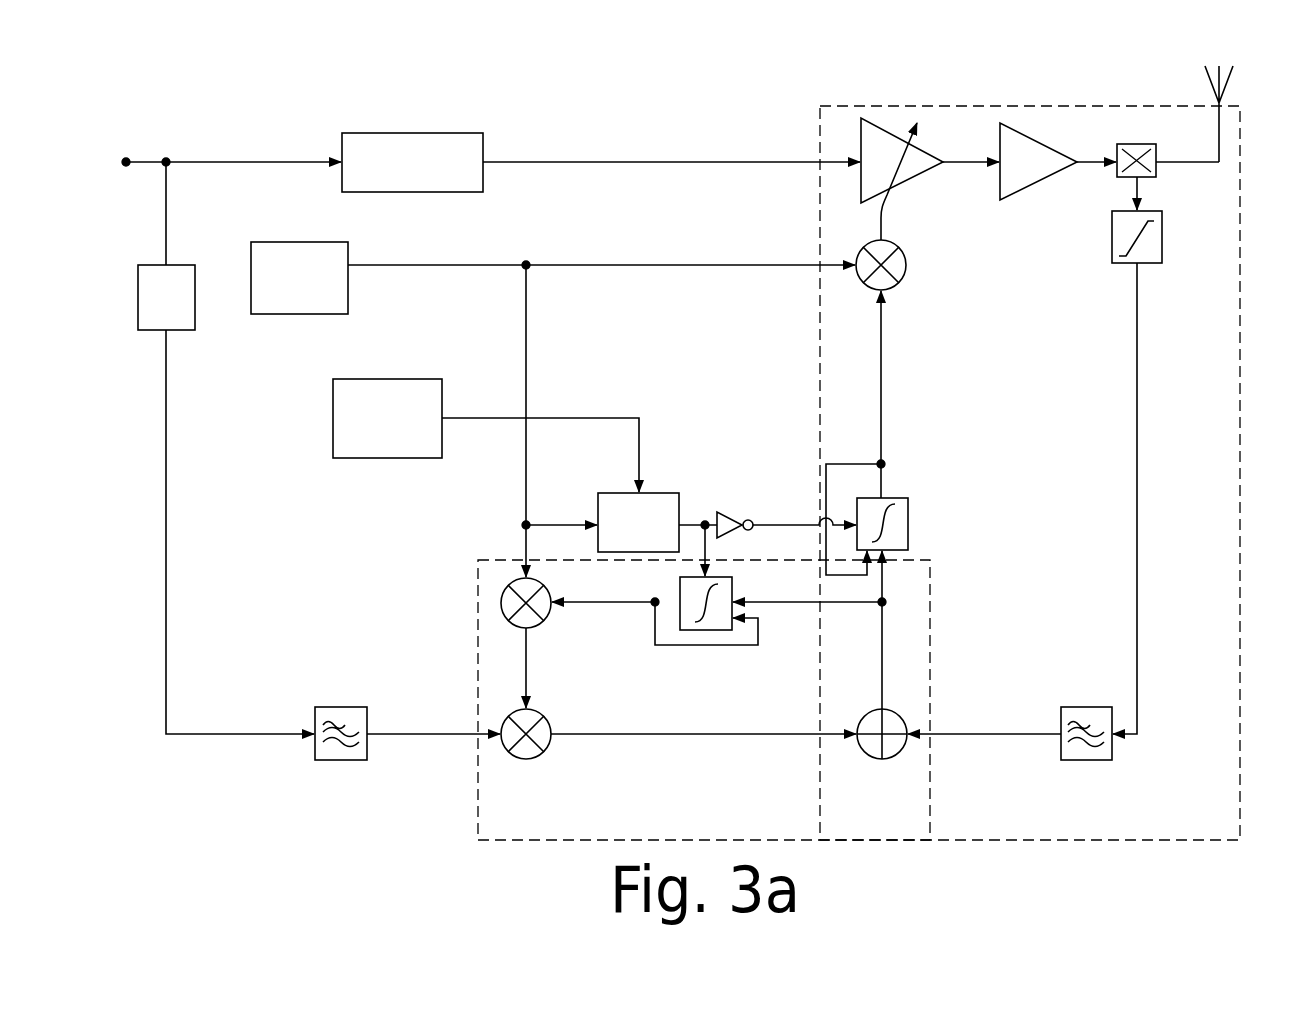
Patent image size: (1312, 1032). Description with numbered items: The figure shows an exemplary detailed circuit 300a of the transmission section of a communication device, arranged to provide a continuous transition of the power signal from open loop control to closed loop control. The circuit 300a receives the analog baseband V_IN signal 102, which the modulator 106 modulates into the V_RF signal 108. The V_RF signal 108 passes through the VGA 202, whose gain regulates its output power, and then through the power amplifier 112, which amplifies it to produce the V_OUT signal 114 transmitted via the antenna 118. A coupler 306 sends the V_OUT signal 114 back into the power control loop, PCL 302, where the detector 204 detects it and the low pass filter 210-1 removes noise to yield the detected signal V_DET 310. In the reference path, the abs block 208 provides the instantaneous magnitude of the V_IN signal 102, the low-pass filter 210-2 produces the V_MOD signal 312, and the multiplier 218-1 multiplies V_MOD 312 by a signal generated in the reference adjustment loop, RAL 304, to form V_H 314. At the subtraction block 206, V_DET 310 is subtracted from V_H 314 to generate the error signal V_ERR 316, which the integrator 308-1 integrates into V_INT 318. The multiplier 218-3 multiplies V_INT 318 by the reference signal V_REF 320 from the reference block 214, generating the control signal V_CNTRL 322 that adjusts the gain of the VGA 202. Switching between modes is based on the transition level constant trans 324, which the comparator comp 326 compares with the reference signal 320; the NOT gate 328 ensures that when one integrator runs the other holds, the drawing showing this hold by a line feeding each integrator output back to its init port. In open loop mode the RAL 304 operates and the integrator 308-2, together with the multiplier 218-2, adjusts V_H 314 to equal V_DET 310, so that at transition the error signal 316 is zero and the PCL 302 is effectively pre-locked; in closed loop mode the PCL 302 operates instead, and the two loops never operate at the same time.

The detailed circuit 300a is at (665, 82).
The V_IN signal 102 is at (165, 157).
The modulator 106 is at (412, 162).
The V_RF signal 108 is at (576, 162).
The VGA 202 is at (902, 160).
The power amplifier 112 is at (1010, 161).
The coupler 306 is at (1137, 144).
The V_OUT signal 114 is at (1187, 158).
The antenna 118 is at (1238, 103).
The detector 204 is at (1162, 233).
The abs block 208 is at (226, 448).
The reference block 214 is at (299, 278).
The V_REF reference signal 320 is at (411, 265).
The V_CNTRL control signal 322 is at (881, 226).
The multiplier 218-3 is at (899, 281).
The V_INT integrated error signal 318 is at (882, 394).
The trans 324 is at (486, 435).
The comp 326 is at (657, 534).
The NOT gate 328 is at (731, 512).
The integrator 308-1 is at (908, 519).
The integrator 308-2 is at (718, 577).
The V_ERR error signal 316 is at (886, 627).
The multiplier 218-2 is at (506, 593).
The multiplier 218-1 is at (532, 758).
The V_MOD signal 312 is at (397, 734).
The V_H signal 314 is at (718, 734).
The subtraction block 206 is at (900, 753).
The V_DET detected signal 310 is at (949, 734).
The low pass filter 210-1 is at (1086, 760).
The low-pass filter 210-2 is at (342, 760).
The reference adjustment loop (RAL) 304 is at (704, 700).
The power control loop (PCL) 302 is at (1030, 473).